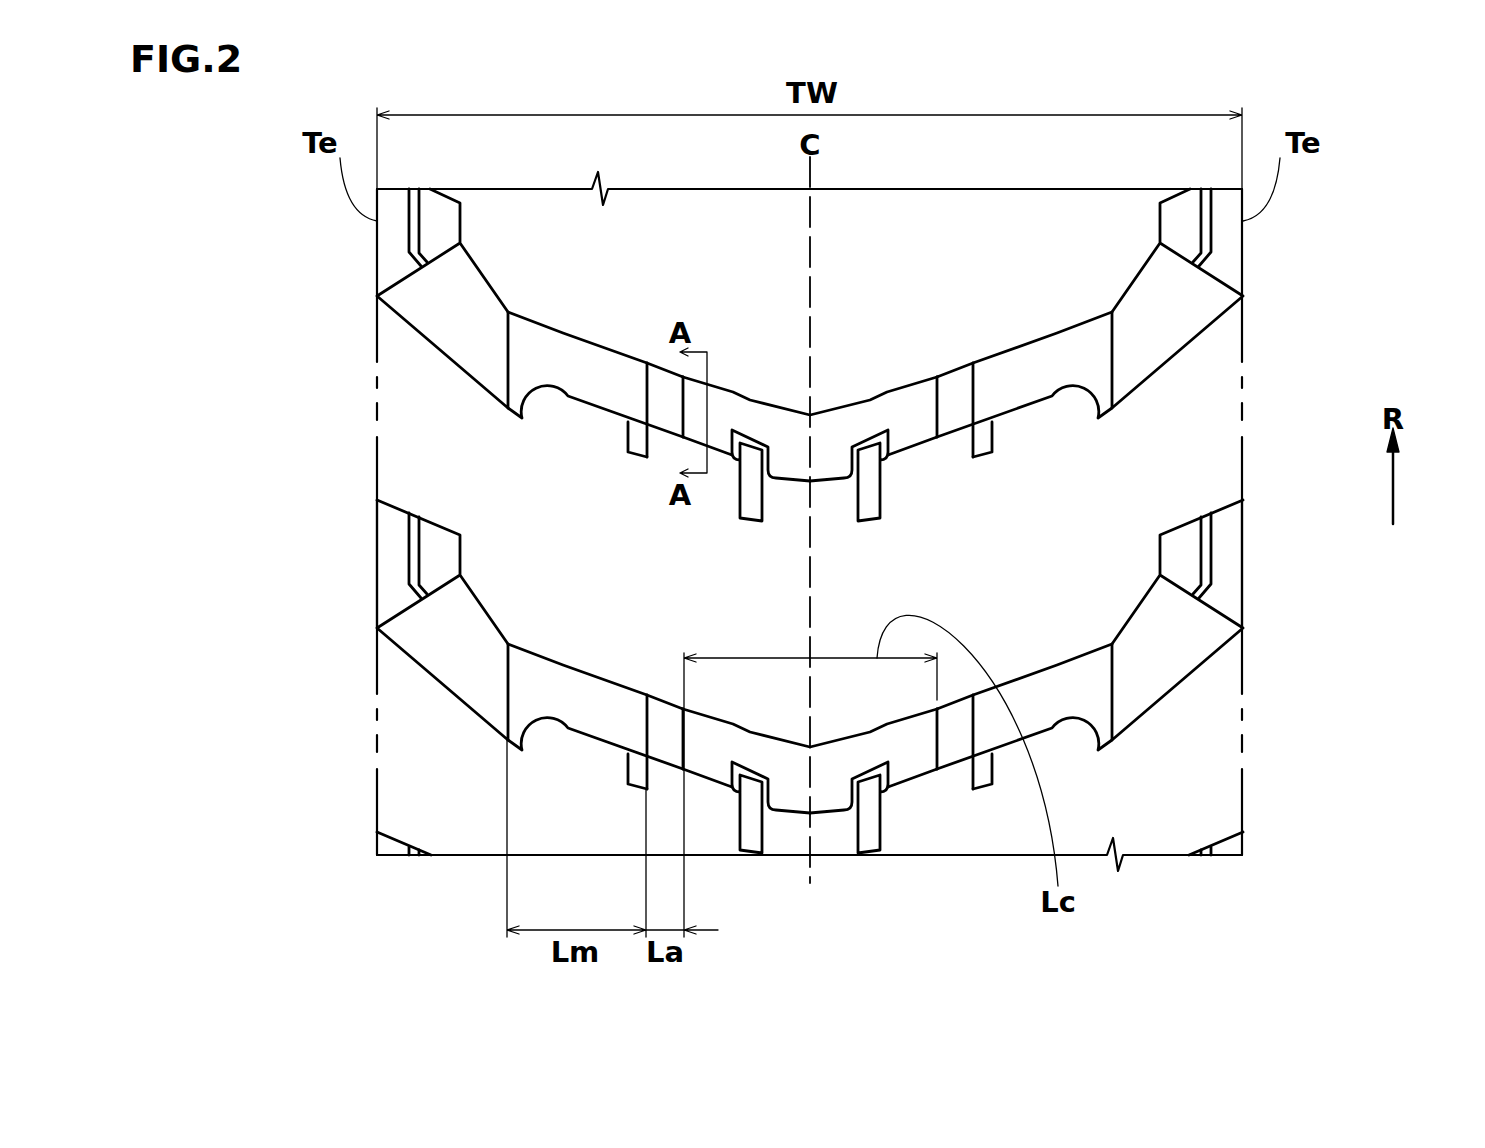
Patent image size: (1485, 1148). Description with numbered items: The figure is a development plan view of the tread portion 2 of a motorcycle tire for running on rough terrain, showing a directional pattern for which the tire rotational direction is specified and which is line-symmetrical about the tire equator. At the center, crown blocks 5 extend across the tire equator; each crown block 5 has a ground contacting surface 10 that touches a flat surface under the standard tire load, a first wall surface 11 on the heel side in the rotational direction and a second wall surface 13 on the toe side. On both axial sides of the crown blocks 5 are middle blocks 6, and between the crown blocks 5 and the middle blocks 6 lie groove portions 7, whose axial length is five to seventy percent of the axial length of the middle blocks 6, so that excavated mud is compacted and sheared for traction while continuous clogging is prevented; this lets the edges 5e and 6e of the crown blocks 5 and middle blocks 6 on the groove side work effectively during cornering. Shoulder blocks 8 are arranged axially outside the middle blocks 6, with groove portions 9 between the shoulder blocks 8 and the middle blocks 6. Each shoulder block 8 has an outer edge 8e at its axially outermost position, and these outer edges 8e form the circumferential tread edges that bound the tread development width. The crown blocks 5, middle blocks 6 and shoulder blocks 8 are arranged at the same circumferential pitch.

The tread portion 2 is at (1360, 125).
The crown block 5 is at (872, 418).
The middle block 6 is at (1040, 370).
The groove portion 7 is at (955, 400).
The shoulder block 8 is at (393, 541).
The outer edge 8e is at (377, 580).
The groove portion 9 is at (450, 650).
The ground contacting surface 10 is at (775, 418).
The first wall surface 11 is at (733, 390).
The second wall surface 13 is at (913, 445).
The edge 5e is at (683, 717).
The edge 6e is at (648, 716).